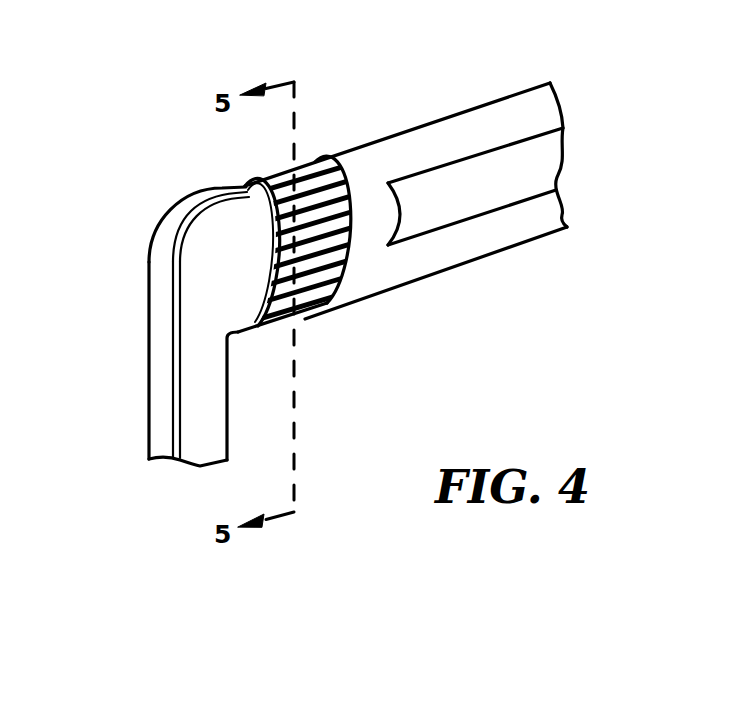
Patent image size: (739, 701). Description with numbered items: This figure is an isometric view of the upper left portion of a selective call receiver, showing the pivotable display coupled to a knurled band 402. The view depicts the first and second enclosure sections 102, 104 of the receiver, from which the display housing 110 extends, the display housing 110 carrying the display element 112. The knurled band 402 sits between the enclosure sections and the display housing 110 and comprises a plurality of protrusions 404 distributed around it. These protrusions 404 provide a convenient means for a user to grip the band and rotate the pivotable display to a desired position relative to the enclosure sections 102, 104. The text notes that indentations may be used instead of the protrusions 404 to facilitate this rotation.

The first enclosure section 102 is at (228, 388).
The second enclosure section 104 is at (150, 247).
The display housing 110 is at (442, 278).
The display element 112 is at (450, 162).
The knurled band 402 is at (318, 186).
The protrusions 404 is at (301, 187).